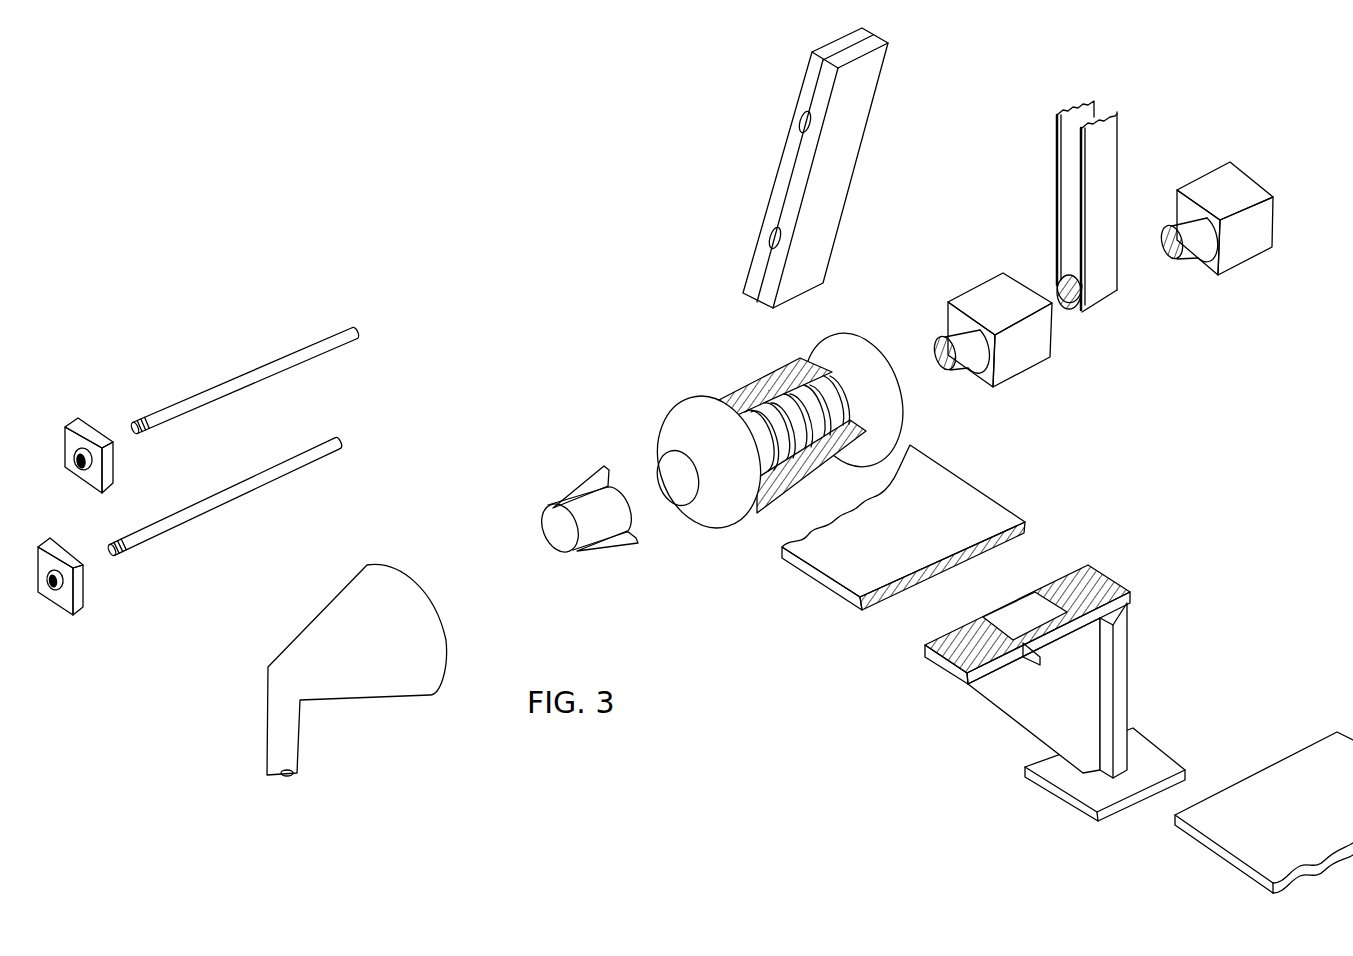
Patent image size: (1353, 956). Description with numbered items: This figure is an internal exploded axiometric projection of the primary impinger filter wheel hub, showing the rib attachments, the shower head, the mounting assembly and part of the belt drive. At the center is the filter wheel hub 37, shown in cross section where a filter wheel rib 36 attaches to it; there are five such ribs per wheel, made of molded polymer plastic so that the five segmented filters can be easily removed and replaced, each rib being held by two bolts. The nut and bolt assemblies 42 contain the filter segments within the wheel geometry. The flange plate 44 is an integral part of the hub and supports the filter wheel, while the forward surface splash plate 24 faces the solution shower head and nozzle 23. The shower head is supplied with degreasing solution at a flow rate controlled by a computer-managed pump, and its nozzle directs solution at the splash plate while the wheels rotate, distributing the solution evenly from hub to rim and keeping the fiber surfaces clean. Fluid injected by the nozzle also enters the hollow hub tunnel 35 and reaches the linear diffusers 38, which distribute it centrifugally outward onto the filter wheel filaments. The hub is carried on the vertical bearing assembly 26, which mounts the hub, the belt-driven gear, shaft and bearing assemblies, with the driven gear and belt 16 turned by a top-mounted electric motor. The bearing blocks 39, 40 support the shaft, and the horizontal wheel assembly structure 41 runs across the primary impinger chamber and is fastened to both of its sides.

The driven gear and belt 16 is at (1095, 290).
The solution shower head and nozzle 23 is at (573, 548).
The forward surface splash plate 24 is at (730, 512).
The vertical bearing assembly 26 is at (938, 660).
The hollow hub tunnel 35 is at (685, 493).
The filter wheel rib 36 is at (788, 163).
The filter wheel hub 37 is at (755, 387).
The linear diffusers 38 is at (813, 427).
The bearing blocks 39 is at (1025, 357).
The bearing blocks 40 is at (1237, 253).
The horizontal wheel assembly structure 41 is at (852, 565).
The nut and bolt assemblies 42 is at (173, 413).
The flange plate 44 is at (835, 345).